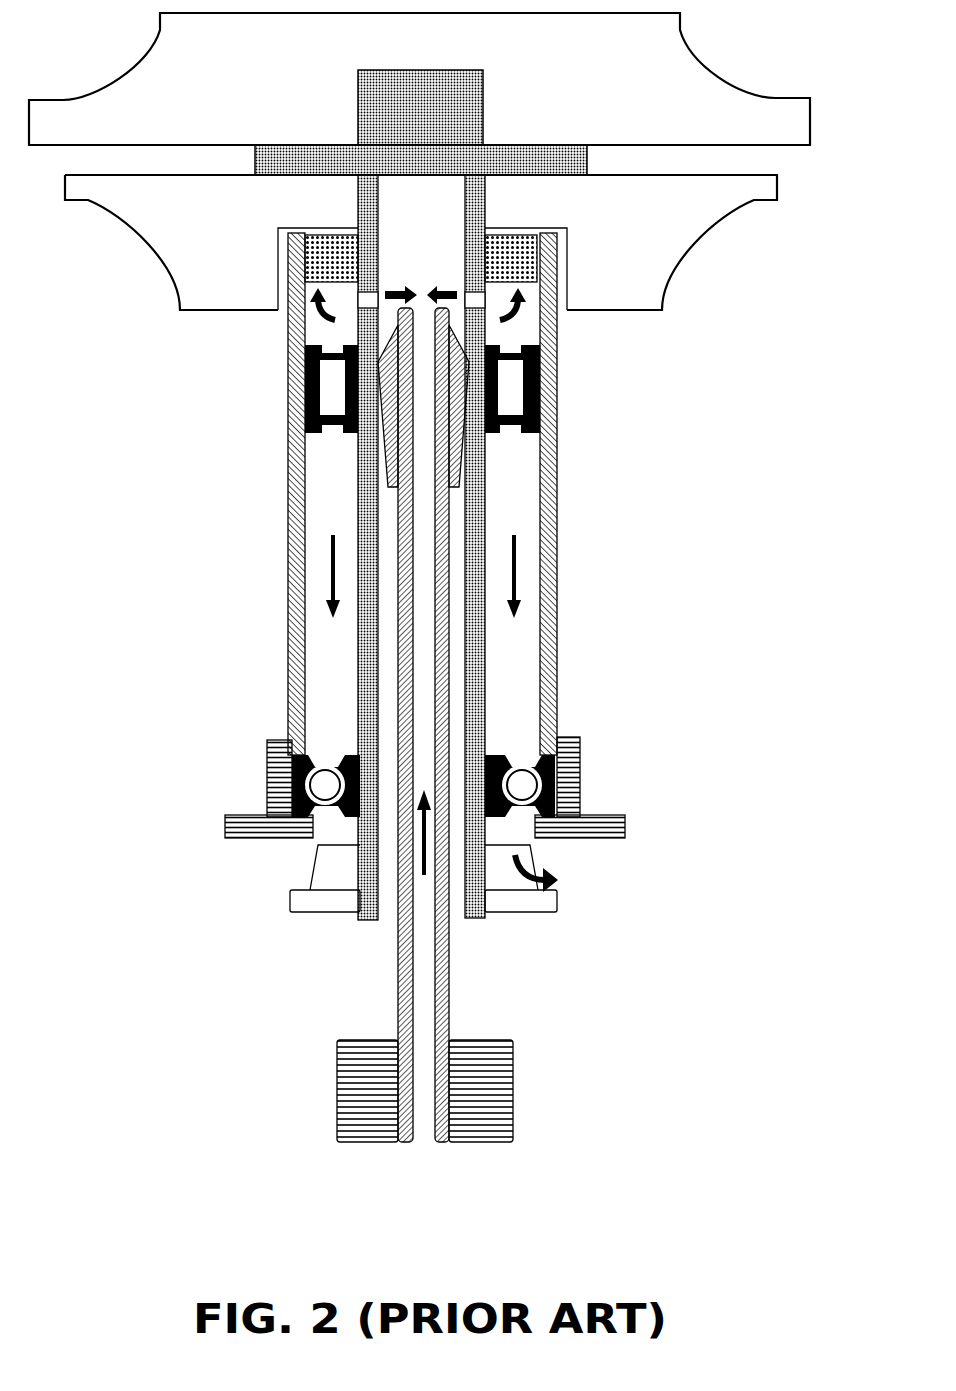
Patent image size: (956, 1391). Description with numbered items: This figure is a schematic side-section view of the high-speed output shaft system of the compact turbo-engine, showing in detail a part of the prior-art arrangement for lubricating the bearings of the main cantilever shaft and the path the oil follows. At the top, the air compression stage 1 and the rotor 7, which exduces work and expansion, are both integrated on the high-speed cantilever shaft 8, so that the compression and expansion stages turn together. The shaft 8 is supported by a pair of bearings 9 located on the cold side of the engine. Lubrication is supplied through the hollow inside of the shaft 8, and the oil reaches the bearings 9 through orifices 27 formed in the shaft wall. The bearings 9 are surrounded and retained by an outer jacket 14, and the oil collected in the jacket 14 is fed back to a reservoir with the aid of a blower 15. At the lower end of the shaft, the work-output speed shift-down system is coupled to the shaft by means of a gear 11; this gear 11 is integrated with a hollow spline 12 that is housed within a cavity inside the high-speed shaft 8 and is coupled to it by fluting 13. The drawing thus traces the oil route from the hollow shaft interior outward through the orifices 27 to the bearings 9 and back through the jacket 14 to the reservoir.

The air compression stage 1 is at (618, 228).
The rotor 7 is at (645, 70).
The high-speed cantilever shaft 8 is at (358, 205).
The bearings 9 is at (288, 460).
The gear 11 is at (340, 1050).
The hollow spline 12 is at (449, 950).
The fluting 13 is at (553, 458).
The outer jacket 14 is at (557, 622).
The blower 15 is at (323, 873).
The orifices 27 is at (358, 300).